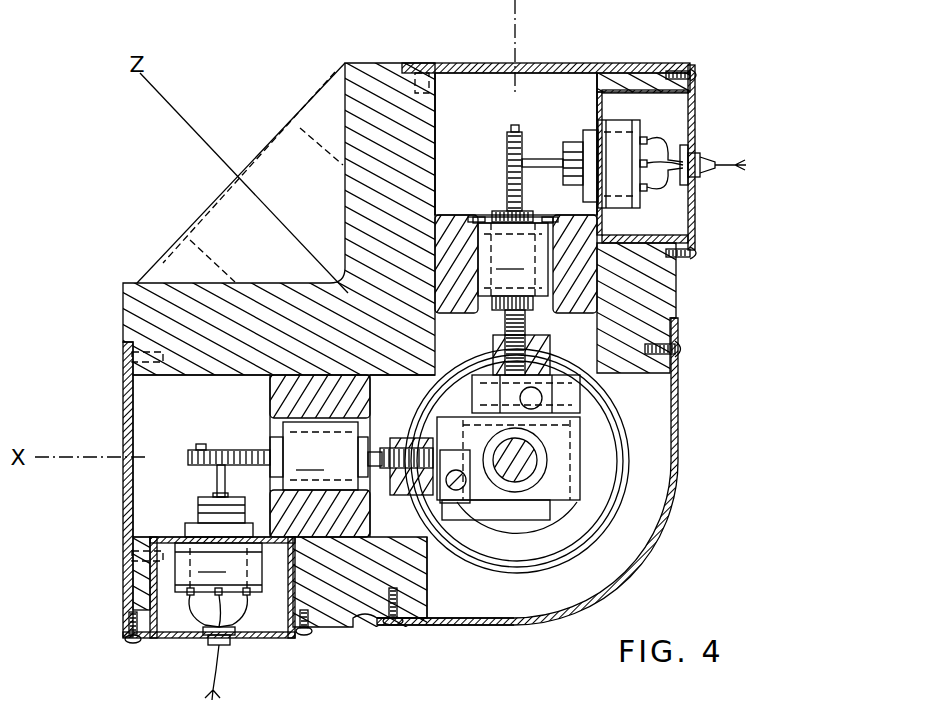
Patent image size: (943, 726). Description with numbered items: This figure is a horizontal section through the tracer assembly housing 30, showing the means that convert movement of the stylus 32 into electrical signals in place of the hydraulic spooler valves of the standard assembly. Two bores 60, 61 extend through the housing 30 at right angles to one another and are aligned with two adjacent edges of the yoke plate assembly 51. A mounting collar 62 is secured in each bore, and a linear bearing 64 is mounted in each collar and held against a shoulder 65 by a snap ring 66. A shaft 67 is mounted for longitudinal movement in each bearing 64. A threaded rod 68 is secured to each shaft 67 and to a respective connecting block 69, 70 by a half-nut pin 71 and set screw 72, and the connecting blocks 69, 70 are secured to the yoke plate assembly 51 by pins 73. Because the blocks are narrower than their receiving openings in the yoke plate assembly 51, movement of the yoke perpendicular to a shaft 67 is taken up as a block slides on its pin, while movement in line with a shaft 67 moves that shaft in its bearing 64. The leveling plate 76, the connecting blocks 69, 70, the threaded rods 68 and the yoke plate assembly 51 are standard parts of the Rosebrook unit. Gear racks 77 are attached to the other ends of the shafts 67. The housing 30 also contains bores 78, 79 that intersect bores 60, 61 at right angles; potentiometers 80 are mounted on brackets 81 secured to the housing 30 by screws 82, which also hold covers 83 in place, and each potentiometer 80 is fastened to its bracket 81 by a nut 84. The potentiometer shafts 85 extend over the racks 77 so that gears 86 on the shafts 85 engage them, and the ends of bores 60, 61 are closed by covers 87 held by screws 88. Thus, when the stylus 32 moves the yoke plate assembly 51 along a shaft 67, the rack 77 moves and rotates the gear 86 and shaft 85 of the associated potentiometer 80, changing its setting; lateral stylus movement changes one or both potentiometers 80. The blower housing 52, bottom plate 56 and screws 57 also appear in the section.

The assembly housing 30 is at (350, 118).
The stylus member 32 is at (525, 457).
The yoke plate assembly 51 is at (570, 515).
The blower housing 52 is at (612, 568).
The bottom plate 56 is at (490, 625).
The screw 57 is at (688, 349).
The bore 60 is at (142, 525).
The bore 61 is at (565, 75).
The mounting collar 62 is at (445, 232).
The linear bearing 64 is at (415, 356).
The shoulder 65 is at (445, 268).
The snap ring 66 is at (476, 216).
The shaft 67 is at (497, 210).
The threaded rod 68 is at (524, 338).
The connecting block 69 is at (388, 492).
The connecting block 70 is at (552, 356).
The half-nut pin 71 is at (412, 446).
The set screw 72 is at (432, 570).
The pin 73 is at (488, 392).
The leveling plate 76 is at (530, 512).
The gear rack 77 is at (517, 125).
The bore 78 is at (152, 640).
The bore 79 is at (690, 100).
The potentiometer 80 is at (642, 208).
The mounting bracket 81 is at (690, 228).
The screw 82 is at (700, 75).
The cover 83 is at (698, 135).
The nut 84 is at (588, 140).
The potentiometer shaft 85 is at (545, 159).
The gear 86 is at (506, 150).
The cover 87 is at (458, 63).
The screw 88 is at (418, 65).